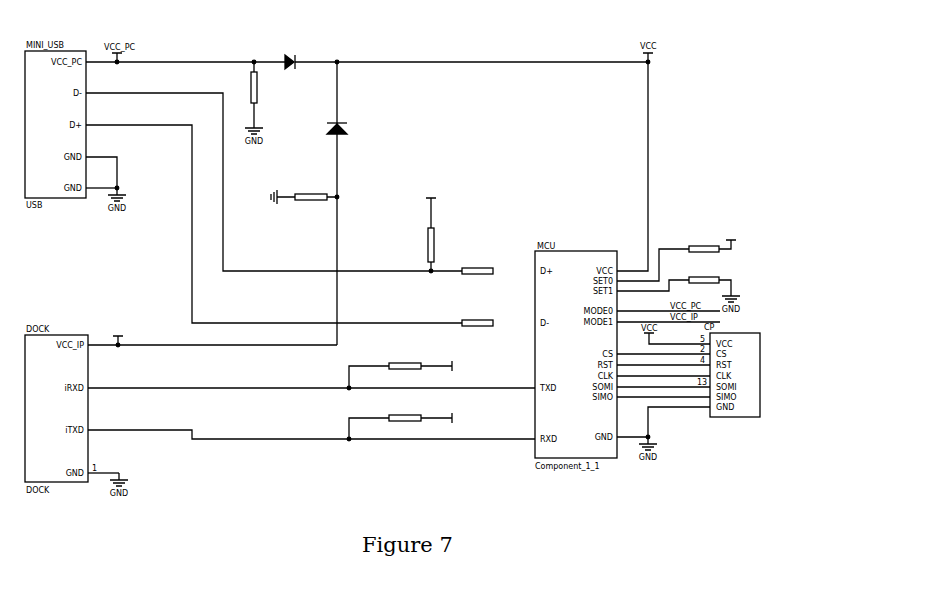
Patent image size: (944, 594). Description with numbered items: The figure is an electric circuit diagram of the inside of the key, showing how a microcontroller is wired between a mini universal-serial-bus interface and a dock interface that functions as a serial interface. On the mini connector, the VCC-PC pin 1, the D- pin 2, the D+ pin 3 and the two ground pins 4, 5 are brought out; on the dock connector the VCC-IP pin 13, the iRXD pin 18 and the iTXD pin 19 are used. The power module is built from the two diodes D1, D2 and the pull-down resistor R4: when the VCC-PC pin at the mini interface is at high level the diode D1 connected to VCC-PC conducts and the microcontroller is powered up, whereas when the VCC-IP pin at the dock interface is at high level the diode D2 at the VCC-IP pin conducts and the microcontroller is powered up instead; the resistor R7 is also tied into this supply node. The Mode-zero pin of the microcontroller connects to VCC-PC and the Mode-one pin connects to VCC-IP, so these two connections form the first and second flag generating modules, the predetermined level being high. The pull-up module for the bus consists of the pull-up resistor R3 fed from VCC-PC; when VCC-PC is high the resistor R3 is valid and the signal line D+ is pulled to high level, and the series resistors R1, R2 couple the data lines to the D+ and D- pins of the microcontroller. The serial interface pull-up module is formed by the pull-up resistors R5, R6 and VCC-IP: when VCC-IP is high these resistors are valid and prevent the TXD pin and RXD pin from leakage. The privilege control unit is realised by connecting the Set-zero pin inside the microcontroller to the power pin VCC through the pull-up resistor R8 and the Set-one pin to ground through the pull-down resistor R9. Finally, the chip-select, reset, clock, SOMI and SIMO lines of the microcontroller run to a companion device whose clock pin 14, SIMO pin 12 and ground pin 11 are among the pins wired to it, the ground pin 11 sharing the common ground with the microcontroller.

The resistor R1 24 ohm R1 is at (477, 271).
The resistor R2 24 ohm R2 is at (477, 323).
The pull-up resistor R3 is at (436, 230).
The pull-down resistor R4 is at (258, 103).
The pull-up resistor R5 is at (415, 371).
The pull-up resistor R6 is at (415, 423).
The resistor R7 1M R7 is at (294, 198).
The pull-up resistor R8 is at (678, 255).
The pull-down resistor R9 is at (678, 290).
The diode D1 is at (290, 62).
The diode D2 is at (351, 202).
The USB pin 1 VCC_PC 1 is at (367, 57).
The USB pin 2 D- 2 is at (274, 177).
The USB pin 3 D+ 3 is at (274, 219).
The USB pin 4 GND 4 is at (101, 168).
The USB pin 5 GND 5 is at (106, 196).
The DOCK pin 13 VCC_IP 13 is at (212, 336).
The DOCK pin 18 iRXD 18 is at (311, 383).
The DOCK pin 19 iTXD 19 is at (311, 430).
The CP pin 11 GND 11 is at (663, 430).
The CP pin 12 SIMO 12 is at (663, 392).
The CP pin 14 CLK 14 is at (663, 371).